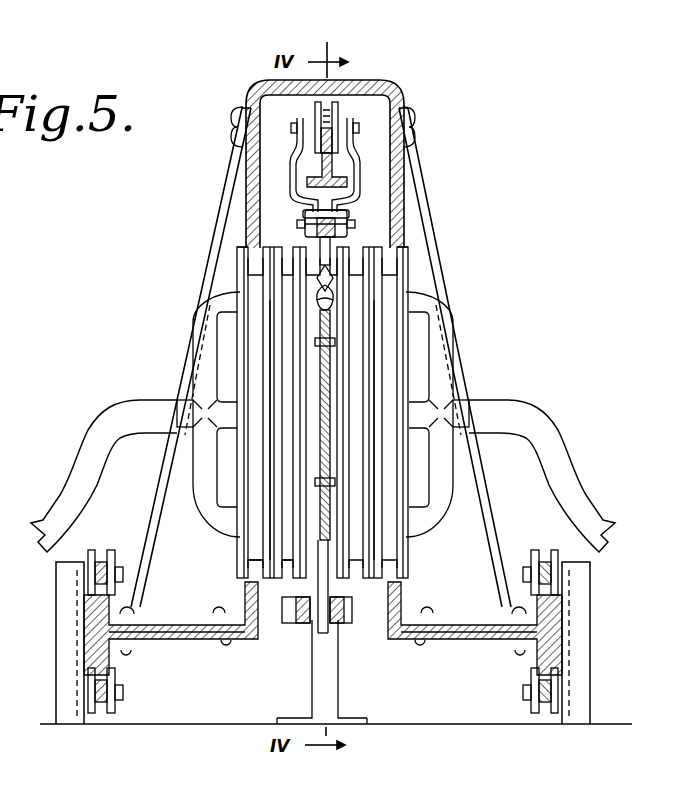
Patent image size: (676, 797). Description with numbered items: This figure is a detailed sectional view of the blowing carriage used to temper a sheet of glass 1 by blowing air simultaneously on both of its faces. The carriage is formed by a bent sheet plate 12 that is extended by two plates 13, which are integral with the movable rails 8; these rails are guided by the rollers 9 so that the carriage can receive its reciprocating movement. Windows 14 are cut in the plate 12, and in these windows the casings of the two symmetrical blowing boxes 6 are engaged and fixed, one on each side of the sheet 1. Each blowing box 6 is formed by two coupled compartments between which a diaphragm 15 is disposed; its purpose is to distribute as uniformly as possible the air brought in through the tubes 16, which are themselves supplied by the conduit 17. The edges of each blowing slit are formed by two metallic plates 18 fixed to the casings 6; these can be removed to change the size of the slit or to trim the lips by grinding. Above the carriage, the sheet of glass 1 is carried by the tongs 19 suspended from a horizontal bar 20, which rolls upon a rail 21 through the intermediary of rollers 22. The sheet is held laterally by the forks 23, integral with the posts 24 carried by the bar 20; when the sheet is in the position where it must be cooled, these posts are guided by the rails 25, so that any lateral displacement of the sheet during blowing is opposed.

The sheet of glass 1 is at (328, 390).
The blowing box 6 is at (282, 302).
The movable rail 8 is at (130, 627).
The roller 9 is at (103, 553).
The bent sheet plate 12 is at (244, 193).
The plate 13 is at (204, 640).
The window 14 is at (237, 247).
The diaphragm 15 is at (282, 344).
The tube 16 is at (205, 377).
The conduit 17 is at (80, 475).
The metallic plate 18 is at (345, 544).
The tongs 19 is at (303, 224).
The horizontal bar 20 is at (349, 224).
The rail 21 is at (330, 172).
The roller 22 is at (335, 102).
The fork 23 is at (334, 342).
The post 24 is at (326, 632).
The rail 25 is at (322, 608).